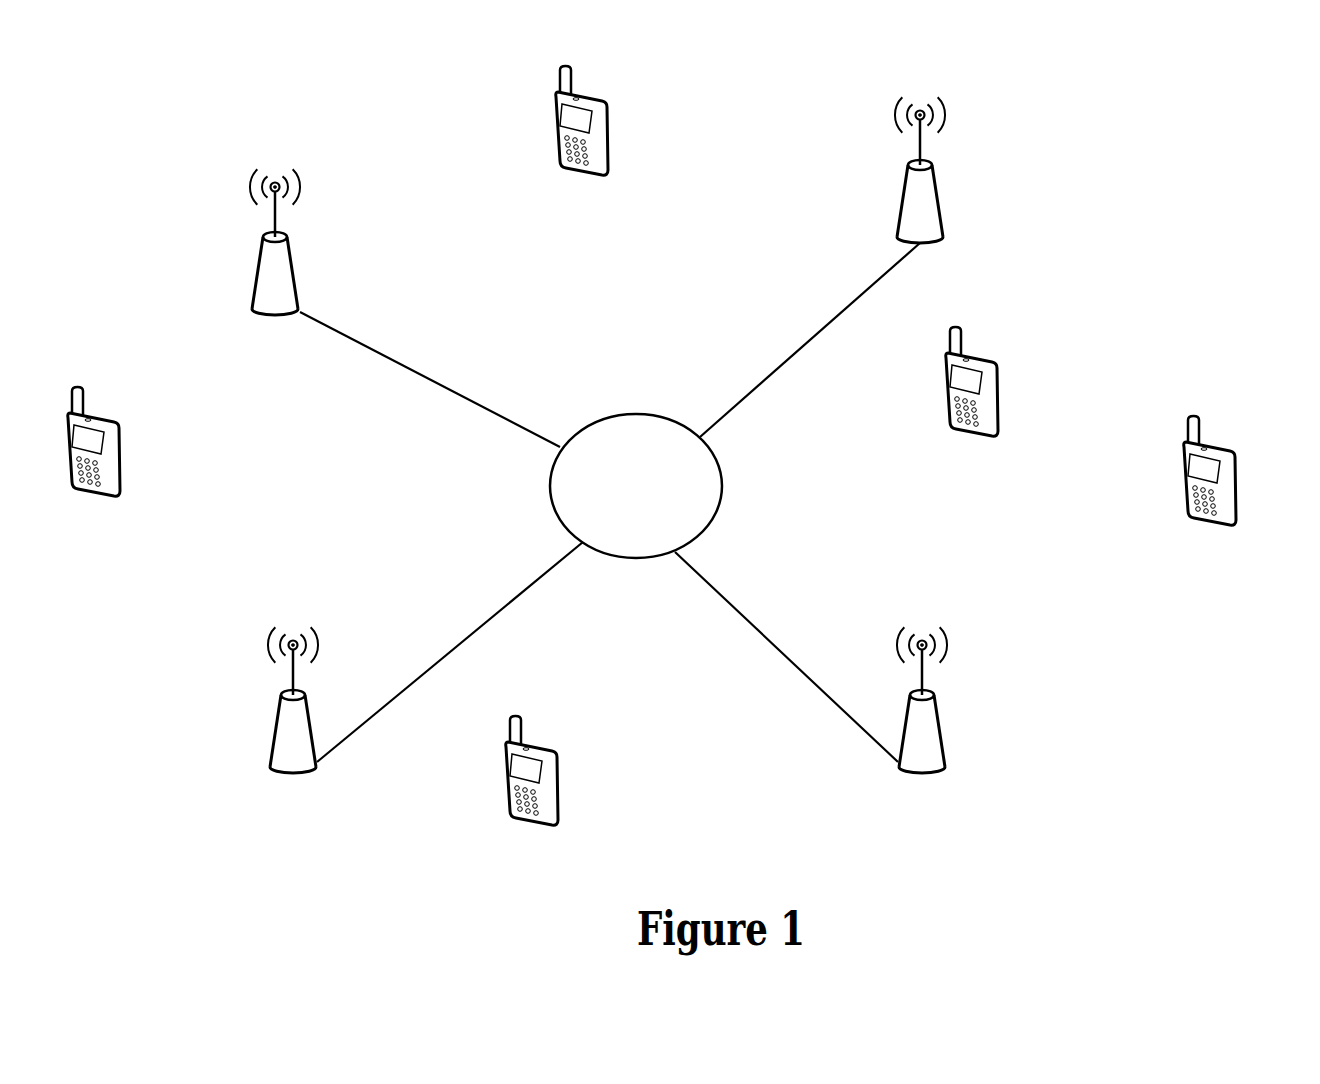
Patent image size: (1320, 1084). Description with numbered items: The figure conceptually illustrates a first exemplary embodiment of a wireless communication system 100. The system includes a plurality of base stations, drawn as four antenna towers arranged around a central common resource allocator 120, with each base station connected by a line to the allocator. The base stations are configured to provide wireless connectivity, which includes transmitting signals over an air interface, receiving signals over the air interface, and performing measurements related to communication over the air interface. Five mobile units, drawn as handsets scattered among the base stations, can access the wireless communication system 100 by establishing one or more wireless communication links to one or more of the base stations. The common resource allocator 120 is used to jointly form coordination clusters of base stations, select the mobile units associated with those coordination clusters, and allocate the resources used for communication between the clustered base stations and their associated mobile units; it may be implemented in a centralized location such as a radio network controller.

The wireless communication system 100 is at (1196, 101).
The common resource allocator 120 is at (610, 518).